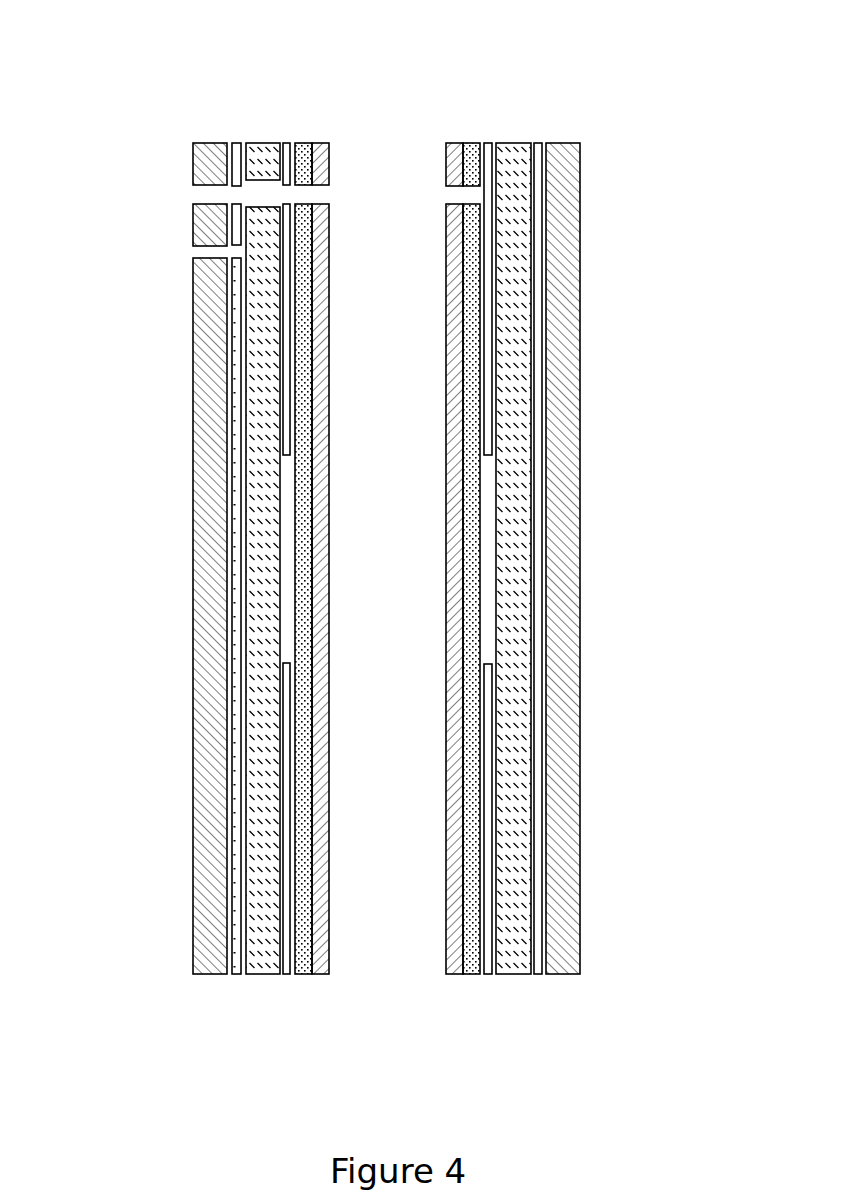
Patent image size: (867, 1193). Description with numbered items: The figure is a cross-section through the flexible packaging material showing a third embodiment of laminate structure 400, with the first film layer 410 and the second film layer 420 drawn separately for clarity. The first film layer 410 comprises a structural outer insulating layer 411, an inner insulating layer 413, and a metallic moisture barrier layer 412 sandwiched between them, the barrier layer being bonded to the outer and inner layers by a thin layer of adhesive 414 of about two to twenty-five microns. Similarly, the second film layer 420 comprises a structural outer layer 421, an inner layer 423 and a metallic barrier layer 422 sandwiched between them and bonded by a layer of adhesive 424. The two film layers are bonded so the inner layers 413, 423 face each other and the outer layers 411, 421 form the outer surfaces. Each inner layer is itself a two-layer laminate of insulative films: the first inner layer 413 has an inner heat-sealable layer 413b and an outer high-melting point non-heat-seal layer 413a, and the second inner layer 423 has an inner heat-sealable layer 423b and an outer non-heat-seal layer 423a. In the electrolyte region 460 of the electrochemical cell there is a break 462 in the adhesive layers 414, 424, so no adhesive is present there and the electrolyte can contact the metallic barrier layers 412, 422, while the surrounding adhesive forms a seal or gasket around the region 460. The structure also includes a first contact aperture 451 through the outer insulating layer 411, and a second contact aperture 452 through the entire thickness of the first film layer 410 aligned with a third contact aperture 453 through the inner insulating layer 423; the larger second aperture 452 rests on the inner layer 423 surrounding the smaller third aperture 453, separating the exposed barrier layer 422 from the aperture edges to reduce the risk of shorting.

The laminate structure 400 is at (176, 68).
The first film layer 410 is at (193, 990).
The structural outer insulating layer 411 is at (215, 340).
The metallic moisture barrier layer 412 is at (263, 707).
The inner insulating layer 413 is at (295, 134).
The outer high-melting point non-heat-seal layer 413a is at (302, 802).
The inner heat-sealable layer 413b is at (317, 868).
The layer of adhesive 414 is at (235, 445).
The second film layer 420 is at (446, 990).
The structural outer layer 421 is at (568, 287).
The metallic barrier layer 422 is at (512, 650).
The inner insulating layer 423 is at (446, 134).
The outer high-melting point non-heat-seal layer 423a is at (478, 802).
The inner heat-sealable layer 423b is at (458, 870).
The layer of adhesive 424 is at (537, 403).
The first contact aperture 451 is at (208, 258).
The second contact aperture 452 is at (208, 203).
The third contact aperture 453 is at (472, 204).
The electrolyte region 460 is at (162, 463).
The break in the adhesive layers 462 is at (284, 663).